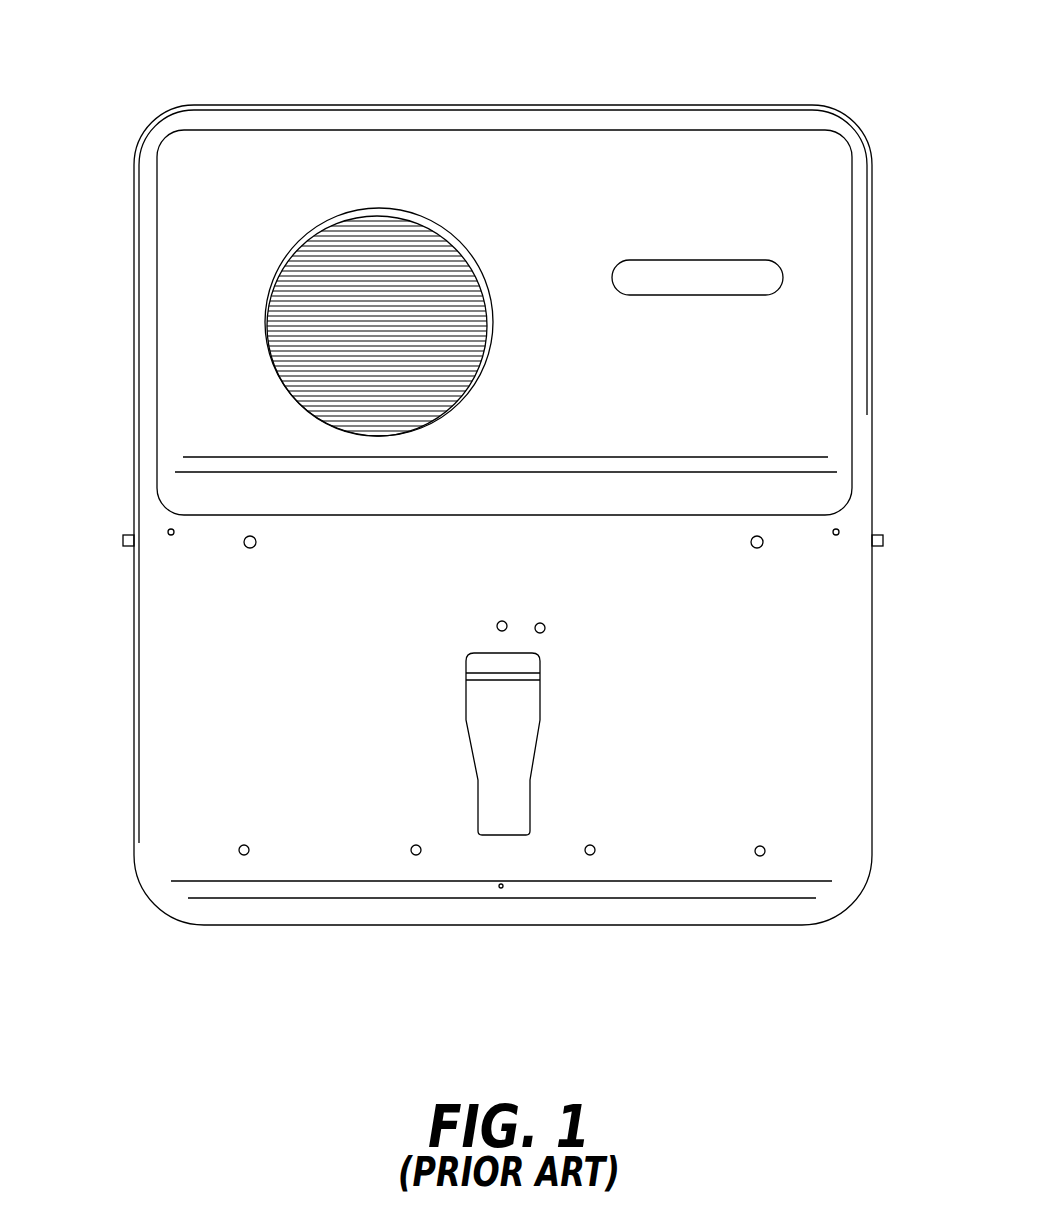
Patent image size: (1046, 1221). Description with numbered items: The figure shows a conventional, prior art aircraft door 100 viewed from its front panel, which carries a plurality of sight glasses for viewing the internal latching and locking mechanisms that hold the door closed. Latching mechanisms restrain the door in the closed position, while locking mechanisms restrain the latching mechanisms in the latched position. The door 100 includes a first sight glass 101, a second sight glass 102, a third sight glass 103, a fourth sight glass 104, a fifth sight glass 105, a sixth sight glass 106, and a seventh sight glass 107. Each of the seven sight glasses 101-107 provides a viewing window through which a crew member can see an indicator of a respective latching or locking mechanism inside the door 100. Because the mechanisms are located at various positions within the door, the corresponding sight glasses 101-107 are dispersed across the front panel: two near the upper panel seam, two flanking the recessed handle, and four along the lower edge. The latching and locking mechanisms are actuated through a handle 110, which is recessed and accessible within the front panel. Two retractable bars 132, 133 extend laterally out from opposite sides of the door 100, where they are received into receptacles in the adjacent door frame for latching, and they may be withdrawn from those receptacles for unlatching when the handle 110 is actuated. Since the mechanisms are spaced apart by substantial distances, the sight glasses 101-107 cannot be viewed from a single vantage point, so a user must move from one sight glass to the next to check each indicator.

The aircraft door 100 is at (214, 84).
The first sight glass 101 is at (546, 628).
The second sight glass 102 is at (757, 536).
The third sight glass 103 is at (250, 536).
The fourth sight glass 104 is at (247, 856).
The fifth sight glass 105 is at (412, 856).
The sixth sight glass 106 is at (586, 856).
The seventh sight glass 107 is at (756, 857).
The handle 110 is at (532, 730).
The retractable bar 132 is at (885, 540).
The retractable bar 133 is at (121, 540).